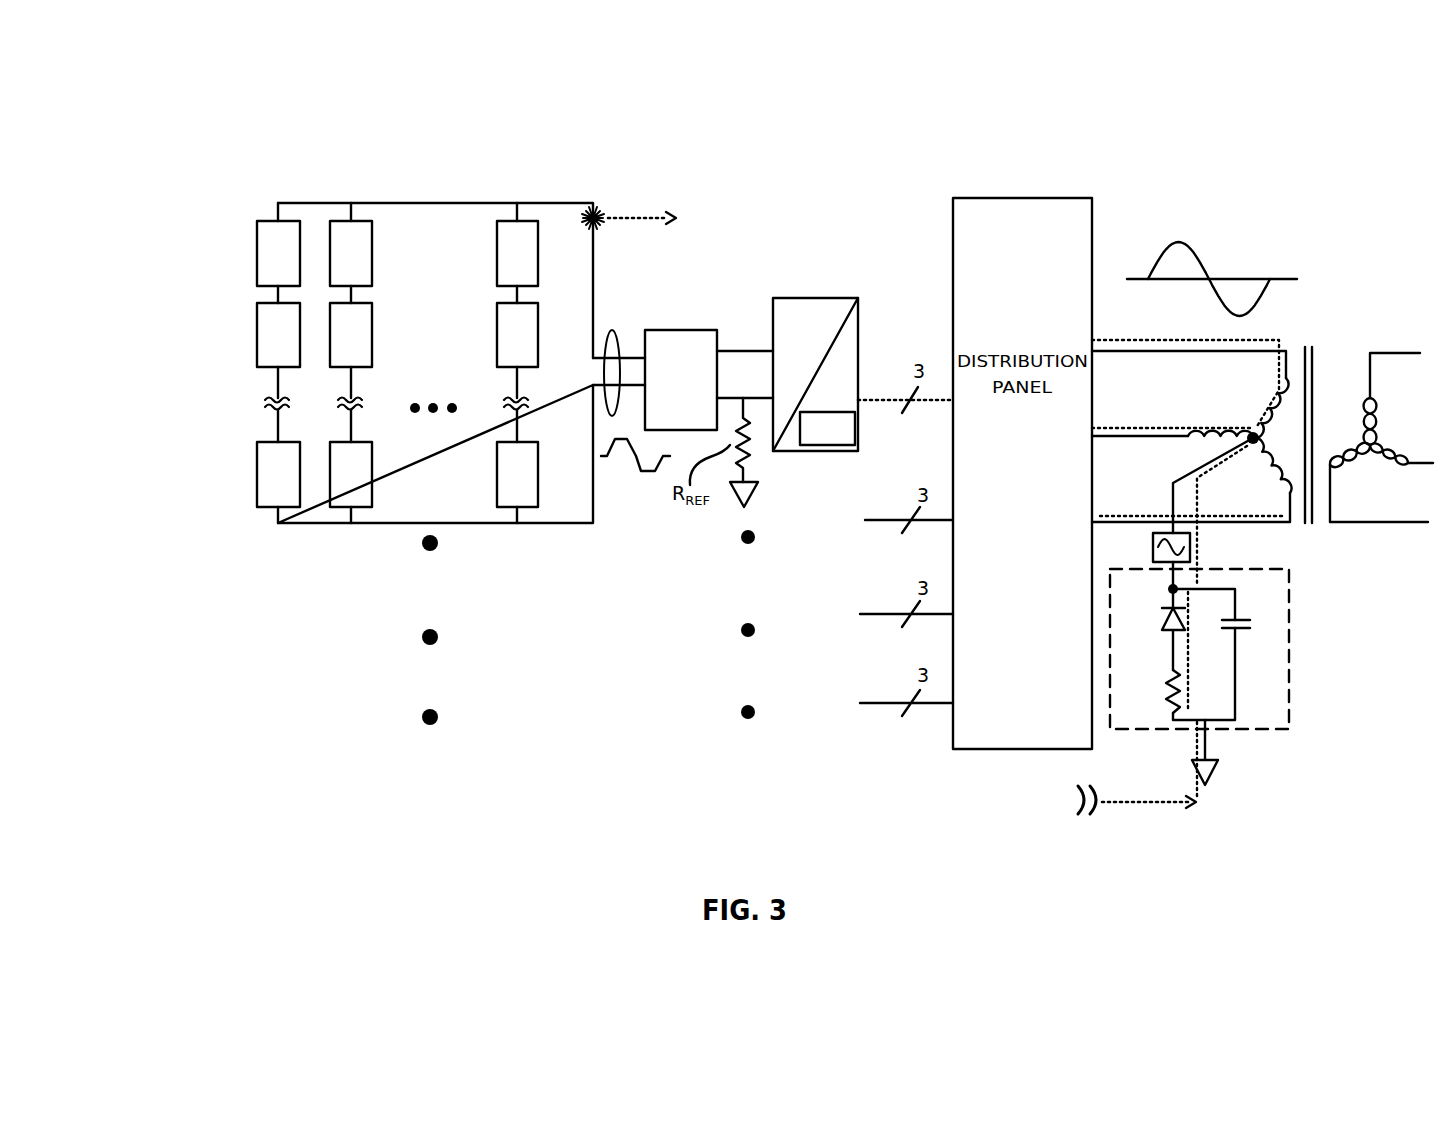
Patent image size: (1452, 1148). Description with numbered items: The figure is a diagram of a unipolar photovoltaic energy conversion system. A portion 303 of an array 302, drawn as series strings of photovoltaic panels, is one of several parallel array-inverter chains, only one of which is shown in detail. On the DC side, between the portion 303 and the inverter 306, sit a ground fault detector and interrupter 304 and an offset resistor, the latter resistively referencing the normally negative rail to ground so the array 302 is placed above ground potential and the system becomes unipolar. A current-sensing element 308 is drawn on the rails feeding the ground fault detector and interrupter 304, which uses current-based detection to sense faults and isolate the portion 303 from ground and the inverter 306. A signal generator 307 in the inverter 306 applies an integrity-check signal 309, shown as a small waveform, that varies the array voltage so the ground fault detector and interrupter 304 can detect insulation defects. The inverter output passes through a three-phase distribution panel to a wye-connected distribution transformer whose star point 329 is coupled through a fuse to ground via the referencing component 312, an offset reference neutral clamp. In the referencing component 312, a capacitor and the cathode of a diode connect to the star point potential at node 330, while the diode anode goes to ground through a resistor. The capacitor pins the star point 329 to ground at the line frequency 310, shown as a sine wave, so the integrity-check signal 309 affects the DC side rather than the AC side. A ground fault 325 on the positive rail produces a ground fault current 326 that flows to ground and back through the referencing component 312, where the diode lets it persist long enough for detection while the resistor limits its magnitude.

The array 302 is at (262, 193).
The portion of the array 303 is at (198, 200).
The ground fault detector and interrupter 304 is at (709, 380).
The inverter 306 is at (815, 374).
The signal generator 307 is at (827, 428).
The current transformer sensor 308 is at (612, 330).
The integrity-check signal 309 is at (638, 485).
The line frequency 310 is at (1205, 223).
The referencing component 312 is at (1289, 585).
The ground fault 325 is at (603, 180).
The ground fault current 326 is at (629, 214).
The star point 329 is at (1242, 400).
The node 330 is at (1170, 587).